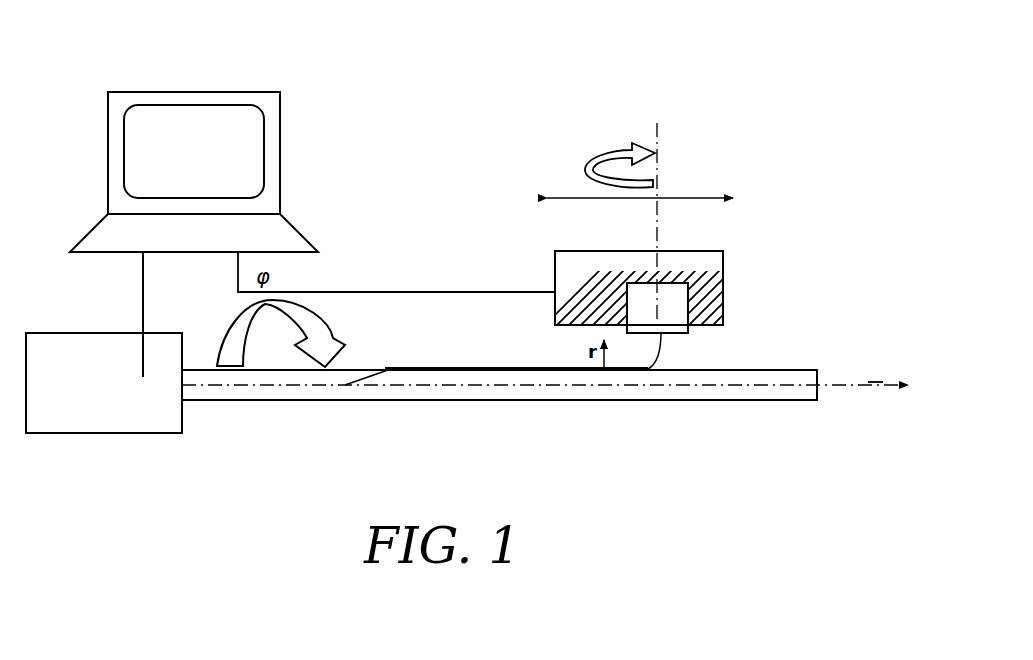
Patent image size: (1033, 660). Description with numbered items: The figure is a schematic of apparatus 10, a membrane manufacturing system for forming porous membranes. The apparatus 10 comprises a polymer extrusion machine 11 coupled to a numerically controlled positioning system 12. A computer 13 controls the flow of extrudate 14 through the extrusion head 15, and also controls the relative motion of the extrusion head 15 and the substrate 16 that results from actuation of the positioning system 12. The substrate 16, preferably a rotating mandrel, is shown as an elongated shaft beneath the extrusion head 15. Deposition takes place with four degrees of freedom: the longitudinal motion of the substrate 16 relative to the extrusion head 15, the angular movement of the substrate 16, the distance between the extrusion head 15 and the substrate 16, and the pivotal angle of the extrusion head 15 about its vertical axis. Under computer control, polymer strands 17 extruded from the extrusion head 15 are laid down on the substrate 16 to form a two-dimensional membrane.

The apparatus 10 is at (646, 79).
The polymer extrusion machine 11 is at (800, 183).
The numerically controlled positioning system 12 is at (110, 402).
The computer 13 is at (280, 144).
The extrudate 14 is at (655, 282).
The extrusion head 15 is at (676, 318).
The substrate 16 is at (680, 388).
The polymer strands 17 is at (483, 371).